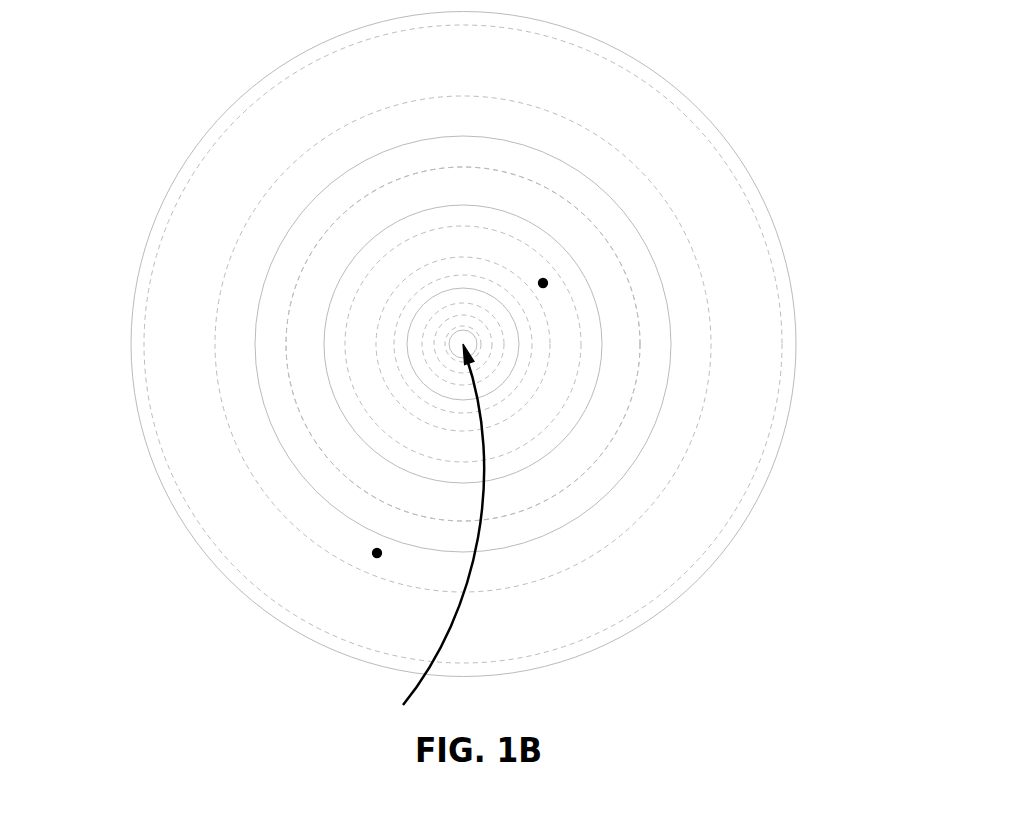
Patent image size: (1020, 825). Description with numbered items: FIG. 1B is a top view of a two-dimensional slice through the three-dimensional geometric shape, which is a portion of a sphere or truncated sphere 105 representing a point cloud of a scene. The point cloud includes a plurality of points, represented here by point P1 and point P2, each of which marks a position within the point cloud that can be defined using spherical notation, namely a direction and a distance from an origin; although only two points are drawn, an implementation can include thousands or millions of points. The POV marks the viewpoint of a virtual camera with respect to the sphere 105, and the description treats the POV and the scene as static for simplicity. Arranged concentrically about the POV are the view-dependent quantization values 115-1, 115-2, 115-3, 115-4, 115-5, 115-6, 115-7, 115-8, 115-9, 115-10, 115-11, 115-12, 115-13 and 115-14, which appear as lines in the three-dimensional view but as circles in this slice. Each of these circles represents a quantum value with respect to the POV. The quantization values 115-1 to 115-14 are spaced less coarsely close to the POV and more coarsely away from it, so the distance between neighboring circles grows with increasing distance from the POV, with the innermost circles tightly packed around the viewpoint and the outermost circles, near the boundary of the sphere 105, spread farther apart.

The sphere 105 is at (675, 55).
The view-dependent quantization value 115-1 is at (459, 358).
The view-dependent quantization value 115-2 is at (428, 363).
The view-dependent quantization value 115-3 is at (398, 355).
The view-dependent quantization value 115-4 is at (376, 350).
The view-dependent quantization value 115-5 is at (351, 302).
The view-dependent quantization value 115-6 is at (307, 247).
The view-dependent quantization value 115-7 is at (613, 247).
The view-dependent quantization value 115-8 is at (696, 253).
The view-dependent quantization value 115-9 is at (778, 293).
The view-dependent quantization value 115-10 is at (793, 355).
The view-dependent quantization value 115-11 is at (670, 370).
The view-dependent quantization value 115-12 is at (600, 377).
The view-dependent quantization value 115-13 is at (517, 362).
The view-dependent quantization value 115-14 is at (473, 350).
The point of view POV is at (413, 533).
The point P1 is at (360, 544).
The point P2 is at (526, 273).